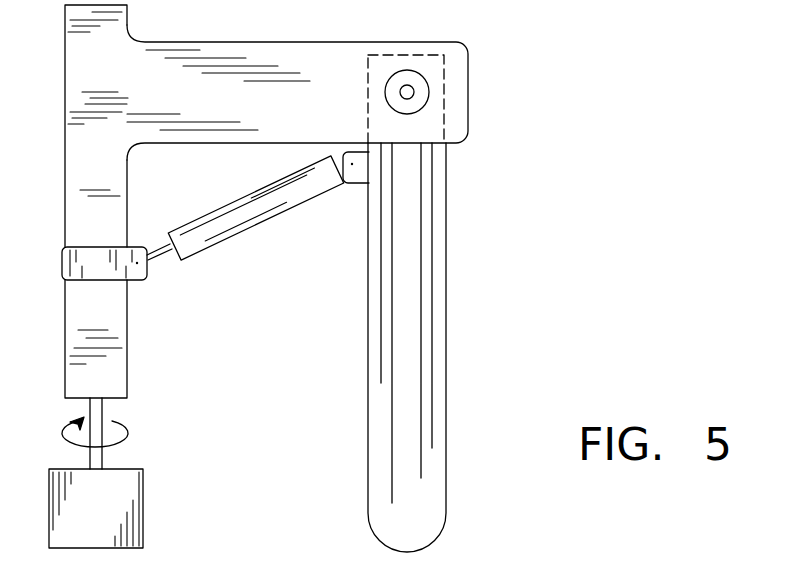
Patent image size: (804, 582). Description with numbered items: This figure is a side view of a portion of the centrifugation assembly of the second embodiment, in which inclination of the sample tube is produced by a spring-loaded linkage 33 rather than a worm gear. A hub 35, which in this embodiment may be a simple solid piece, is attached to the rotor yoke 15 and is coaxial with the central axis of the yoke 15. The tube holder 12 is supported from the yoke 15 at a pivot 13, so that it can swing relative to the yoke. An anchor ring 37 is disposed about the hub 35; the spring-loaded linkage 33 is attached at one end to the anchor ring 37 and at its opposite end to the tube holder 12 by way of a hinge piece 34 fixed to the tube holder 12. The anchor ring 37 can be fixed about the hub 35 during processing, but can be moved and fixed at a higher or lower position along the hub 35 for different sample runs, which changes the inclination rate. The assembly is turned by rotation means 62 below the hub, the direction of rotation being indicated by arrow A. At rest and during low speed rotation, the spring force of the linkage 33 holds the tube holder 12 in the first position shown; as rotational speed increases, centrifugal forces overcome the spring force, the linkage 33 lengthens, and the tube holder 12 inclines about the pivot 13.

The tube holder 12 is at (446, 358).
The pivot 13 is at (407, 88).
The rotor yoke 15 is at (279, 56).
The spring-loaded linkage 33 is at (256, 308).
The hinge piece 34 is at (354, 176).
The hub 35 is at (118, 358).
The anchor ring 37 is at (145, 282).
The rotation means 62 is at (135, 500).
The rotation direction A is at (130, 433).